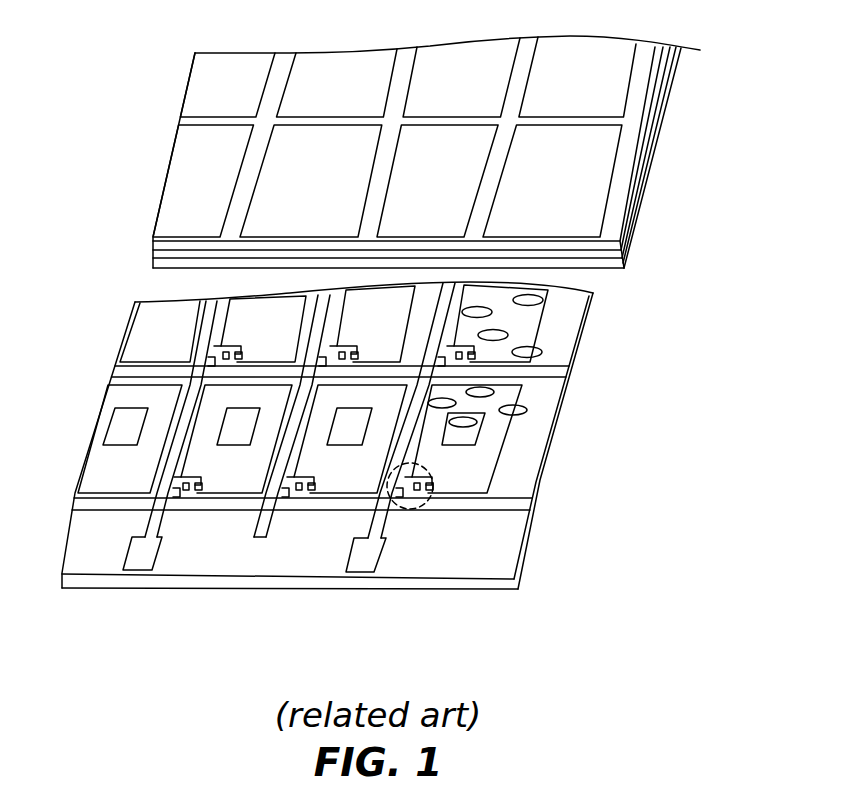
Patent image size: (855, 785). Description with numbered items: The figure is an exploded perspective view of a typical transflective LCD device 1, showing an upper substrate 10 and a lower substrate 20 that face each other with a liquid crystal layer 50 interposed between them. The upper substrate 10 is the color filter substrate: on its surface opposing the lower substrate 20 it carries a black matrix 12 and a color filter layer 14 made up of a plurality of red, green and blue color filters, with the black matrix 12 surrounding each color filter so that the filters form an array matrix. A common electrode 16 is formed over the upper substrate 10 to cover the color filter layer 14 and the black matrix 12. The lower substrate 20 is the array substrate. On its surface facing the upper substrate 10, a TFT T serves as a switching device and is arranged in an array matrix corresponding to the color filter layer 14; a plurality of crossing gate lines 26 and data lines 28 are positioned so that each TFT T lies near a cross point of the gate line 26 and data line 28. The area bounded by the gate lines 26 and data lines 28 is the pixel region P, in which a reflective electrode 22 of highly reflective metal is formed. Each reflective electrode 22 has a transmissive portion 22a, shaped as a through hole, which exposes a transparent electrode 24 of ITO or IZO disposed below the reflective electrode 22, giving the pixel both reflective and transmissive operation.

The transflective LCD device 1 is at (406, 342).
The upper substrate 10 is at (419, 167).
The black matrix 12 is at (628, 120).
The color filter layer 14 is at (593, 163).
The common electrode 16 is at (613, 268).
The lower substrate 20 is at (490, 583).
The reflective electrode 22 is at (482, 460).
The transmissive portion 22a is at (457, 427).
The transparent electrode 24 is at (482, 413).
The gate line 26 is at (498, 507).
The data line 28 is at (368, 530).
The liquid crystal layer 50 is at (517, 355).
The pixel region P is at (513, 495).
The TFT T is at (424, 505).